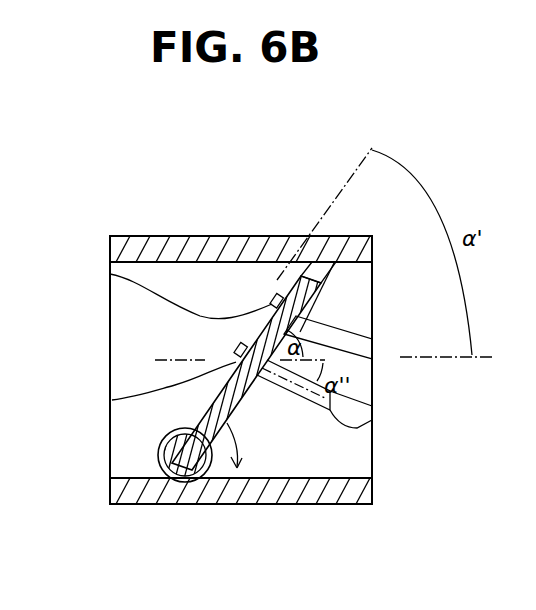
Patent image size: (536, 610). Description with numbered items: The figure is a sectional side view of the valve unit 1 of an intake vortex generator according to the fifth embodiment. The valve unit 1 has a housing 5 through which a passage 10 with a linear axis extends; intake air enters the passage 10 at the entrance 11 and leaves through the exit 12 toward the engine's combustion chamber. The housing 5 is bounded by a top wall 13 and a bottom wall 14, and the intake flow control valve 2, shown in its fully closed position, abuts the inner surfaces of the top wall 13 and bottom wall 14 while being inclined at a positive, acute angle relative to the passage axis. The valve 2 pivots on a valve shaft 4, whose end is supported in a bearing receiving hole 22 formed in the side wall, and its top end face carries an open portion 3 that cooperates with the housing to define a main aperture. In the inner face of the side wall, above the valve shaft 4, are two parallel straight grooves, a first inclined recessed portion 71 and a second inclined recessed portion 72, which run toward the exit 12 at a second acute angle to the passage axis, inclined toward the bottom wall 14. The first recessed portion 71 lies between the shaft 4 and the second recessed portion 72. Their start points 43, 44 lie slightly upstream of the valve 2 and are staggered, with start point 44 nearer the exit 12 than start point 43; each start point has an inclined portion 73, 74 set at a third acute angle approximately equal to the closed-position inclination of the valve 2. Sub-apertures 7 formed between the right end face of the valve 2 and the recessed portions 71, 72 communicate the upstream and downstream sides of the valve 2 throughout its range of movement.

The valve unit 1 is at (108, 184).
The intake flow control valve 2 is at (287, 266).
The open portion 3 is at (326, 262).
The valve shaft 4 is at (173, 483).
The housing 5 is at (177, 233).
The sub-apertures 7 is at (363, 404).
The passage 10 is at (224, 292).
The entrance 11 is at (110, 321).
The exit 12 is at (367, 454).
The top wall 13 is at (199, 250).
The bottom wall 14 is at (264, 498).
The bearing receiving hole 22 is at (160, 456).
The start point of first recessed portion 43 is at (234, 352).
The start point of second recessed portion 44 is at (262, 292).
The first inclined recessed portion 71 is at (370, 428).
The second inclined recessed portion 72 is at (330, 342).
The inclined portion of first recessed portion 73 is at (112, 400).
The inclined portion of second recessed portion 74 is at (110, 274).